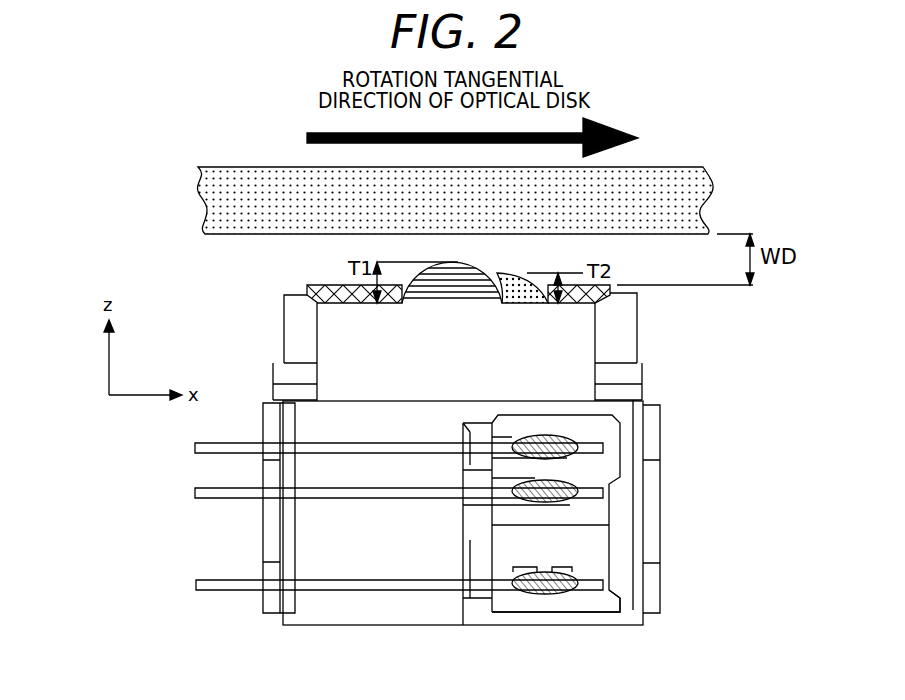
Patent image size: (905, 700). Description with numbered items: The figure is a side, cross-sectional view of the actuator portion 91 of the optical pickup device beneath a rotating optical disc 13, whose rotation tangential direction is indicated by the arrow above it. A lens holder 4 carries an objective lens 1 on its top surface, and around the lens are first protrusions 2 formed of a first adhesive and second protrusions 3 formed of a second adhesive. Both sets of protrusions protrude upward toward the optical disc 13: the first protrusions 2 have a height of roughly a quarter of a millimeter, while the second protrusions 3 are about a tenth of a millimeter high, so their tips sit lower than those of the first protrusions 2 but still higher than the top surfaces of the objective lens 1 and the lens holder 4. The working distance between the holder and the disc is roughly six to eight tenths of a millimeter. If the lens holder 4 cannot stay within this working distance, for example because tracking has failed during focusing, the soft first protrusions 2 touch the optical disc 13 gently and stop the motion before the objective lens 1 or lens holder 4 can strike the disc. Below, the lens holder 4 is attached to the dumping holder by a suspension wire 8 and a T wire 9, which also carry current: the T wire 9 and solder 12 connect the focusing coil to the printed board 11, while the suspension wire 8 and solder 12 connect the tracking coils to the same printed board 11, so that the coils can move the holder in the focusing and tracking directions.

The objective lens 1 is at (347, 285).
The first protrusions 2 is at (440, 292).
The second protrusions 3 is at (520, 277).
The lens holder 4 is at (623, 355).
The suspension wire 8 is at (425, 583).
The T wire 9 is at (278, 493).
The printed board 11 is at (605, 600).
The solder 12 is at (578, 500).
The optical disc 13 is at (692, 183).
The actuator portion 91 is at (650, 343).